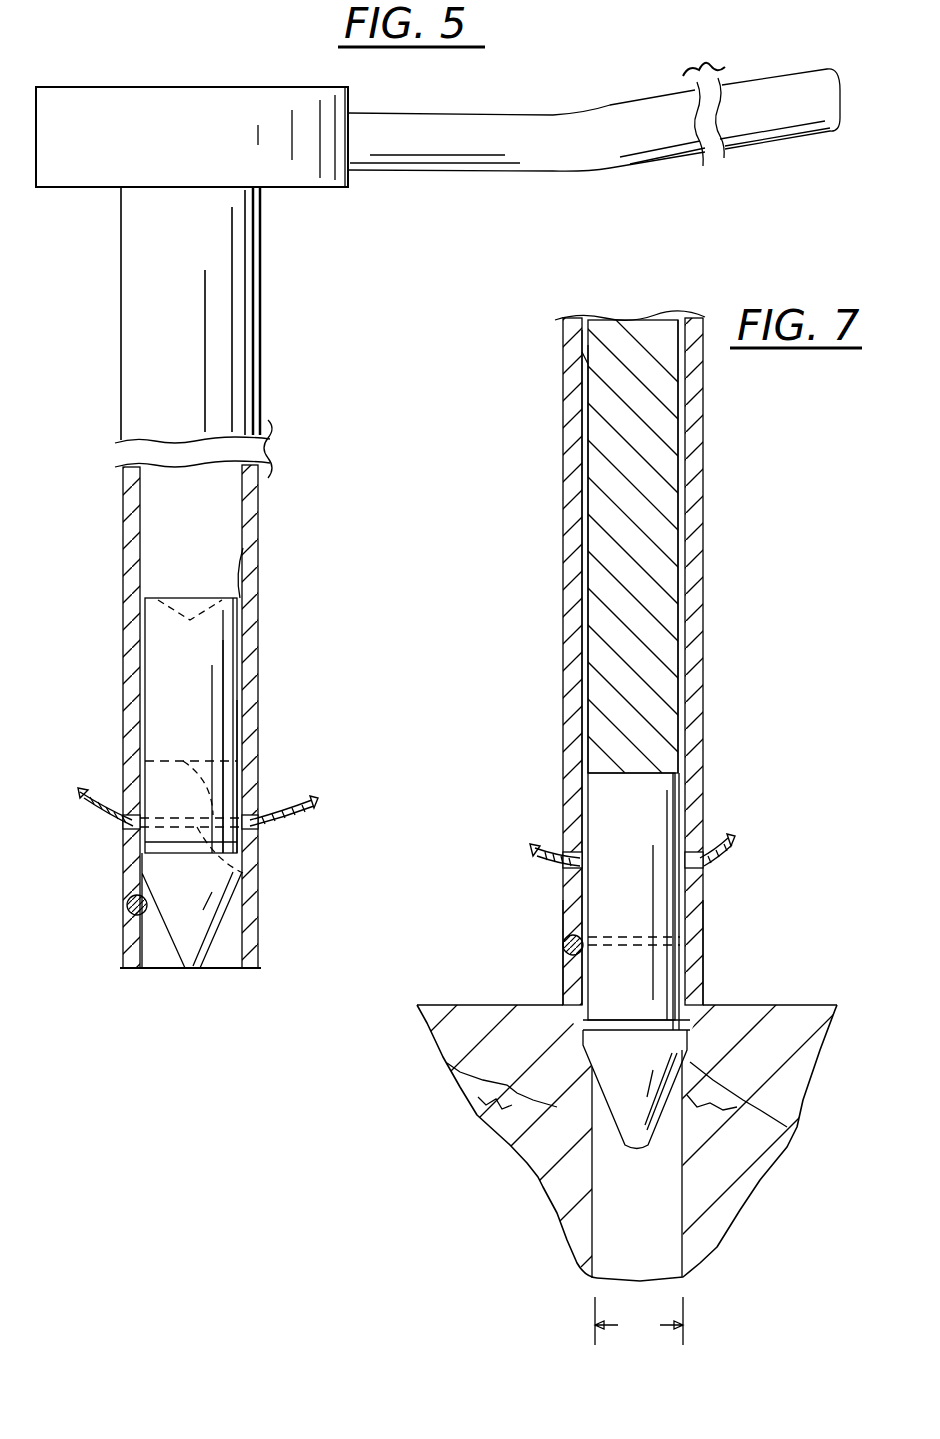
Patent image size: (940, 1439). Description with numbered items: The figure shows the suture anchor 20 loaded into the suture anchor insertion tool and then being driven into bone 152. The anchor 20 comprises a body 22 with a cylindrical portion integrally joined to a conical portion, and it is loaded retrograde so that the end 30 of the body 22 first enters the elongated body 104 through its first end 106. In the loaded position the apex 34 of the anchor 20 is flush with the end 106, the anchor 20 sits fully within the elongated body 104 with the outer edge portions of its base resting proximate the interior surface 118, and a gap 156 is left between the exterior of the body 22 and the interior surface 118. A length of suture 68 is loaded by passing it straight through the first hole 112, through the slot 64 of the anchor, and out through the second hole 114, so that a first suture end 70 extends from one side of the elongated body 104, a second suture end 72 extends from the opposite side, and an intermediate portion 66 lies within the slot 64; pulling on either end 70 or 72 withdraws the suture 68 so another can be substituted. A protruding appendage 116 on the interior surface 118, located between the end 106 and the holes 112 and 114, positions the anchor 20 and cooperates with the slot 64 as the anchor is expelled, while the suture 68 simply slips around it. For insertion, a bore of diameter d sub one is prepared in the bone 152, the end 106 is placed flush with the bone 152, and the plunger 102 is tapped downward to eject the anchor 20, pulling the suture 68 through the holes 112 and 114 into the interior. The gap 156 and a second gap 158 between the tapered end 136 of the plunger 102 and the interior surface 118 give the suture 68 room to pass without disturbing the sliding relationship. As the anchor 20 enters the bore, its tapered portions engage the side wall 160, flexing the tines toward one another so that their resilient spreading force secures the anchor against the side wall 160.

In FIG. 5, the suture anchor 20 is at (205, 652).
In FIG. 7, the suture anchor 20 is at (655, 800).
In FIG. 5, the body 22 is at (205, 708).
In FIG. 5, the end of the body 30 is at (243, 550).
In FIG. 5, the apex 34 is at (191, 965).
In FIG. 5, the slot 64 is at (265, 778).
In FIG. 5, the intermediate portion 66 is at (255, 878).
In FIG. 5, the suture 68 is at (88, 793).
In FIG. 7, the suture 68 is at (712, 862).
In FIG. 5, the first suture end 70 is at (83, 812).
In FIG. 7, the first suture end 70 is at (535, 875).
In FIG. 5, the second suture end 72 is at (312, 812).
In FIG. 7, the second suture end 72 is at (724, 845).
In FIG. 7, the plunger 102 is at (660, 468).
In FIG. 5, the elongated body 104 is at (218, 348).
In FIG. 7, the elongated body 104 is at (705, 622).
In FIG. 5, the first end 106 is at (227, 953).
In FIG. 7, the first end 106 is at (700, 990).
In FIG. 5, the first hole 112 is at (130, 828).
In FIG. 7, the first hole 112 is at (565, 848).
In FIG. 5, the second hole 114 is at (258, 830).
In FIG. 7, the second hole 114 is at (706, 870).
In FIG. 5, the protruding appendage 116 is at (150, 918).
In FIG. 7, the protruding appendage 116 is at (565, 947).
In FIG. 5, the interior surface 118 is at (146, 512).
In FIG. 7, the interior surface 118 is at (587, 523).
In FIG. 7, the tapered end 136 is at (640, 695).
In FIG. 7, the bone 152 is at (545, 1150).
In FIG. 5, the gap 156 is at (240, 737).
In FIG. 7, the gap 156 is at (585, 790).
In FIG. 7, the second gap 158 is at (585, 632).
In FIG. 7, the side wall 160 is at (682, 1190).